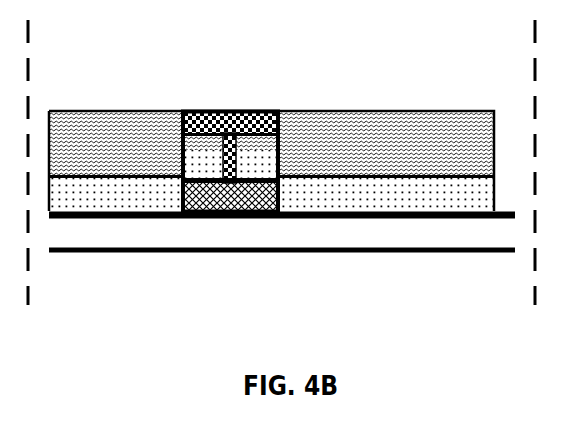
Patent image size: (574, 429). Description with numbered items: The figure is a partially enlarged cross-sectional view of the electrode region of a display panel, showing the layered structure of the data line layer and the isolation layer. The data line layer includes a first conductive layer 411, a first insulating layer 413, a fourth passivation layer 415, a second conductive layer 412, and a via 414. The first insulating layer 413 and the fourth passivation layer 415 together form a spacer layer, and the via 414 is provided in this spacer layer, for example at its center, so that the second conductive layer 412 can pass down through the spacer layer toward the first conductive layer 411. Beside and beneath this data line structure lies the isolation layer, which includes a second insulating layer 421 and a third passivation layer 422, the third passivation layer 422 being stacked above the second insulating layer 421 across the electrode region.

The first conductive layer 411 is at (217, 192).
The second conductive layer 412 is at (230, 110).
The first insulating layer 413 is at (200, 171).
The via 414 is at (215, 190).
The fourth passivation layer 415 is at (201, 110).
The second insulating layer 421 is at (345, 192).
The third passivation layer 422 is at (329, 152).